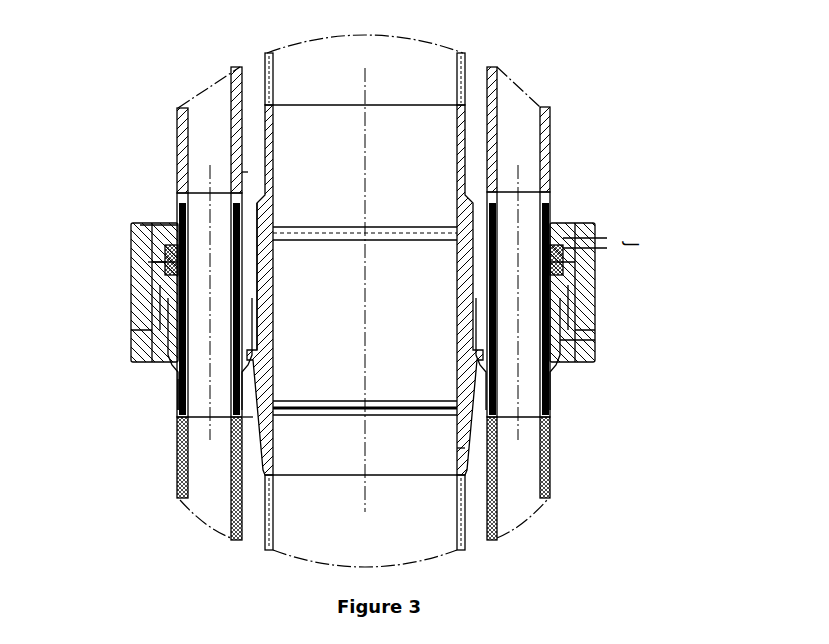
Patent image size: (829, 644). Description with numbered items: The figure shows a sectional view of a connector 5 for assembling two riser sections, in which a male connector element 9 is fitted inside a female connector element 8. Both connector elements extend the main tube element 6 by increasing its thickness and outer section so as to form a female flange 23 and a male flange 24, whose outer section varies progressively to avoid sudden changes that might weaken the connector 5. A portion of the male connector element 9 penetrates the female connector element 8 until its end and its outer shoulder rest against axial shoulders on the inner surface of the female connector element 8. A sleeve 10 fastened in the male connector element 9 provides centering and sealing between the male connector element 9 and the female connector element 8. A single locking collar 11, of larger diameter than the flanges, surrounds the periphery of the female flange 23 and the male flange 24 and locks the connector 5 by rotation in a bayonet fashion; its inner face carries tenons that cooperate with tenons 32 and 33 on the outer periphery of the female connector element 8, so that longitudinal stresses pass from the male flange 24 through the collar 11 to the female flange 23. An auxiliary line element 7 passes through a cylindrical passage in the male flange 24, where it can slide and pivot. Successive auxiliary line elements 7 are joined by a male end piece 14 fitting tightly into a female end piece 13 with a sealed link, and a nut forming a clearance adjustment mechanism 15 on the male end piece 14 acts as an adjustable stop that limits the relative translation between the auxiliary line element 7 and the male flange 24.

The connector 5 is at (646, 278).
The main tube element 6 is at (465, 67).
The auxiliary line element 7 is at (550, 153).
The female connector element 8 is at (463, 448).
The male connector element 9 is at (262, 160).
The sleeve 10 is at (462, 352).
The locking collar 11 is at (133, 286).
The female end piece 13 is at (178, 379).
The male end piece 14 is at (140, 225).
The clearance adjustment mechanism 15 is at (148, 262).
The female flange 23 is at (243, 417).
The male flange 24 is at (248, 172).
The tenon 32 is at (595, 305).
The tenon 33 is at (595, 340).